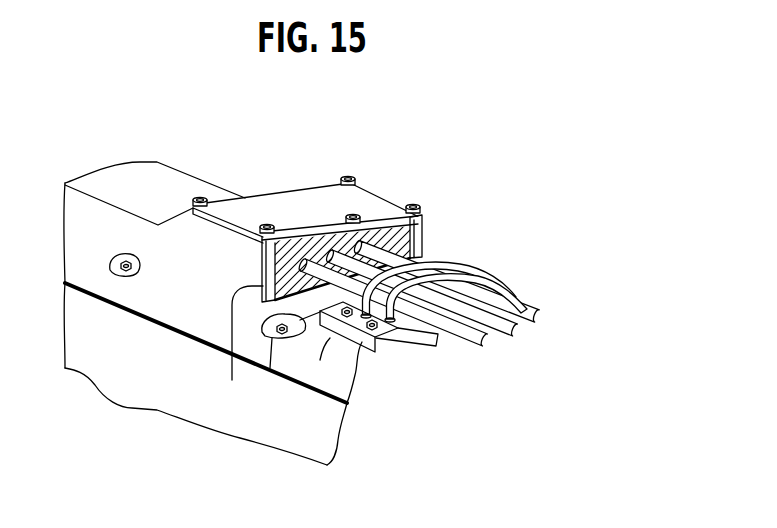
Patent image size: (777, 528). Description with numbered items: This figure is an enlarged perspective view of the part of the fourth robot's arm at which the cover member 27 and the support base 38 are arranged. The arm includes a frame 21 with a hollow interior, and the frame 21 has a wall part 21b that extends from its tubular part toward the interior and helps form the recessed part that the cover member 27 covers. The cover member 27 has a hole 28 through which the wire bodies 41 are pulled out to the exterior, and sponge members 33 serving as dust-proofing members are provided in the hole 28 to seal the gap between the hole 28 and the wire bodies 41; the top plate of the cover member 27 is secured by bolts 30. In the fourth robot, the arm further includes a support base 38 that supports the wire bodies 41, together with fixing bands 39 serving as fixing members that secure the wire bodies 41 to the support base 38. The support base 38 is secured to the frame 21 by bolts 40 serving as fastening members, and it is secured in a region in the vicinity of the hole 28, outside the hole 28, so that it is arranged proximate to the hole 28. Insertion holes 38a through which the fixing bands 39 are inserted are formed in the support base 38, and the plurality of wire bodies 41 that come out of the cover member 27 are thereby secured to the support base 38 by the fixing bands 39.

The frame 21 is at (107, 370).
The wall part 21b is at (320, 360).
The cover member 27 is at (173, 180).
The hole 28 is at (299, 228).
The bolts 30 is at (267, 229).
The sponge members 33 is at (232, 380).
The support base 38 is at (358, 348).
The insertion holes 38a is at (402, 333).
The fixing bands 39 is at (448, 262).
The bolts 40 is at (380, 348).
The wire bodies 41 is at (534, 316).